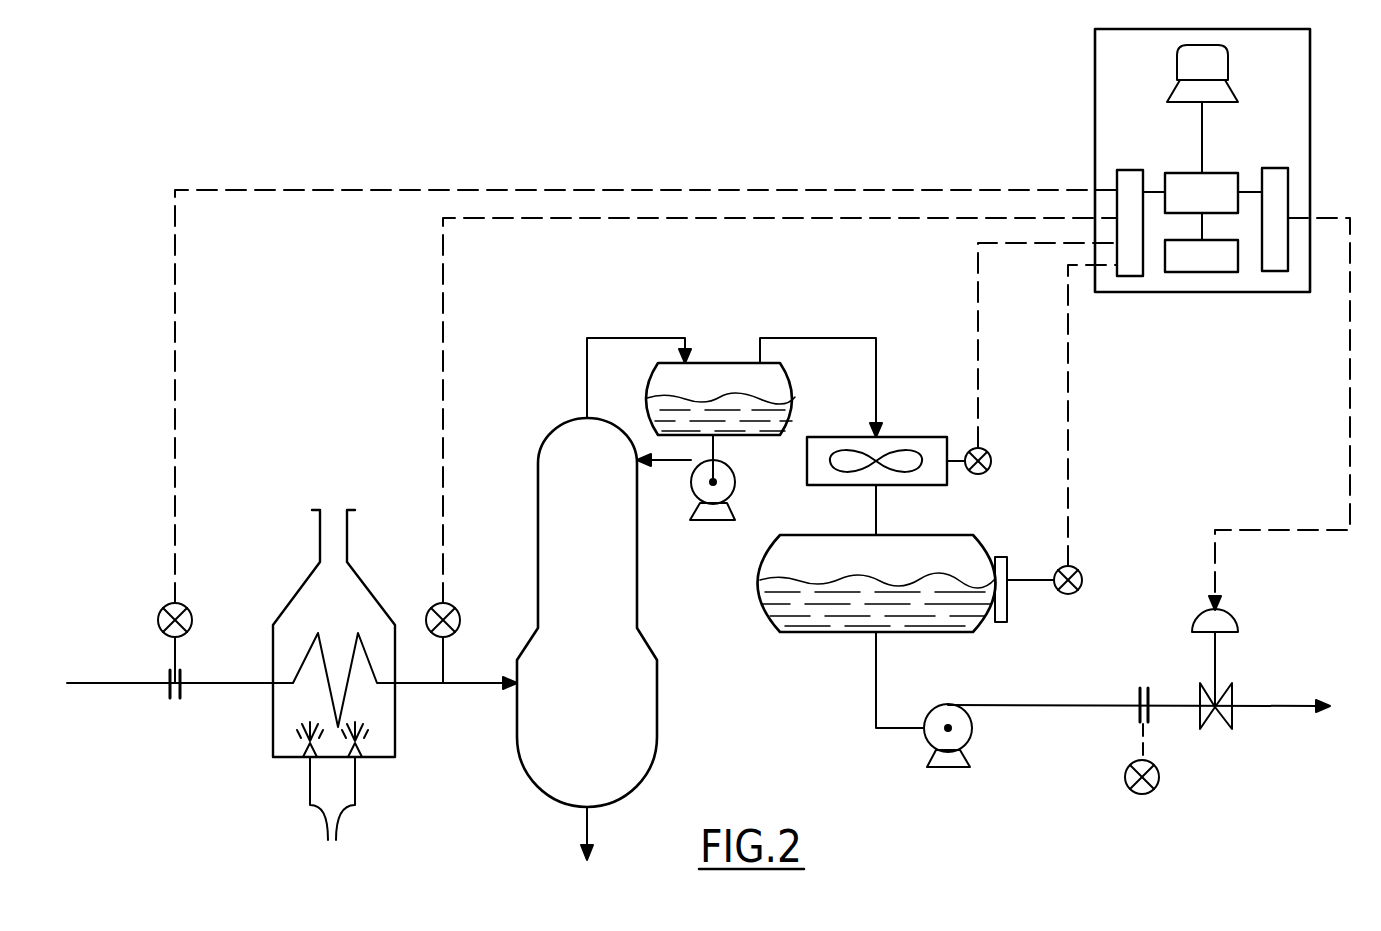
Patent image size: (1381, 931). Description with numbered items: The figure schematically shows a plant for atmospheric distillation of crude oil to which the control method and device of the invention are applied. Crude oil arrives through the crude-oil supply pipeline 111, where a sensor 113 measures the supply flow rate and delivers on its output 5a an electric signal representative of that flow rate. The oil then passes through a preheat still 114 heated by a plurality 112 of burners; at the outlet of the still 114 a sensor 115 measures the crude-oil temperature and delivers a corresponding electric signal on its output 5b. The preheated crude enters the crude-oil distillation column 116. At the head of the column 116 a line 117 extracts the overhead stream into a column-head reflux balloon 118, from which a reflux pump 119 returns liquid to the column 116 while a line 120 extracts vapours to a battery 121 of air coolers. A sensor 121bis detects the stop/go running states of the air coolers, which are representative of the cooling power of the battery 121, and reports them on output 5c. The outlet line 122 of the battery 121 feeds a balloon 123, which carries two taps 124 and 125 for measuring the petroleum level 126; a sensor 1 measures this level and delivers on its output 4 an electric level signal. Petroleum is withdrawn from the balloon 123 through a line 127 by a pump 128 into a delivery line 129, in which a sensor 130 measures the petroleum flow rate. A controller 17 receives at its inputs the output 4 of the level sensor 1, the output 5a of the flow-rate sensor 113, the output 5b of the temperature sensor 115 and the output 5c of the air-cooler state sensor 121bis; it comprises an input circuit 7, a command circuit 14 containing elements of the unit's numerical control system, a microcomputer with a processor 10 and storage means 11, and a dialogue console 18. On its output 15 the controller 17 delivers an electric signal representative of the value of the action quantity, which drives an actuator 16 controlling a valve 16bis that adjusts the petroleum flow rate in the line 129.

The sensor 1 is at (1082, 570).
The output 4 is at (1068, 320).
The output 5a is at (1053, 190).
The output 5b is at (1025, 218).
The output 5c is at (988, 243).
The input circuit 7 is at (1130, 276).
The processor 10 is at (1225, 173).
The storage means 11 is at (1225, 272).
The command circuit 14 is at (1272, 168).
The output 15 is at (1330, 218).
The actuator 16 is at (1196, 616).
The valve 16bis is at (1218, 730).
The controller 17 is at (1192, 292).
The dialogue console 18 is at (1230, 60).
The crude-oil supply pipeline 111 is at (80, 686).
The plurality of burners 112 is at (332, 799).
The sensor 113 is at (186, 604).
The preheat still 114 is at (272, 718).
The sensor 115 is at (455, 604).
The crude-oil distillation column 116 is at (553, 433).
The line 117 is at (628, 338).
The column-head reflux balloon 118 is at (727, 363).
The reflux pump 119 is at (736, 488).
The line 120 is at (808, 338).
The battery of air coolers 121 is at (913, 437).
The sensor 121bis is at (985, 448).
The outlet line 122 is at (878, 510).
The balloon 123 is at (962, 536).
The tap 124 is at (1000, 624).
The tap 125 is at (1003, 558).
The petroleum level 126 is at (836, 605).
The line 127 is at (880, 673).
The pump 128 is at (924, 738).
The delivery line 129 is at (1045, 705).
The sensor 130 is at (1125, 780).